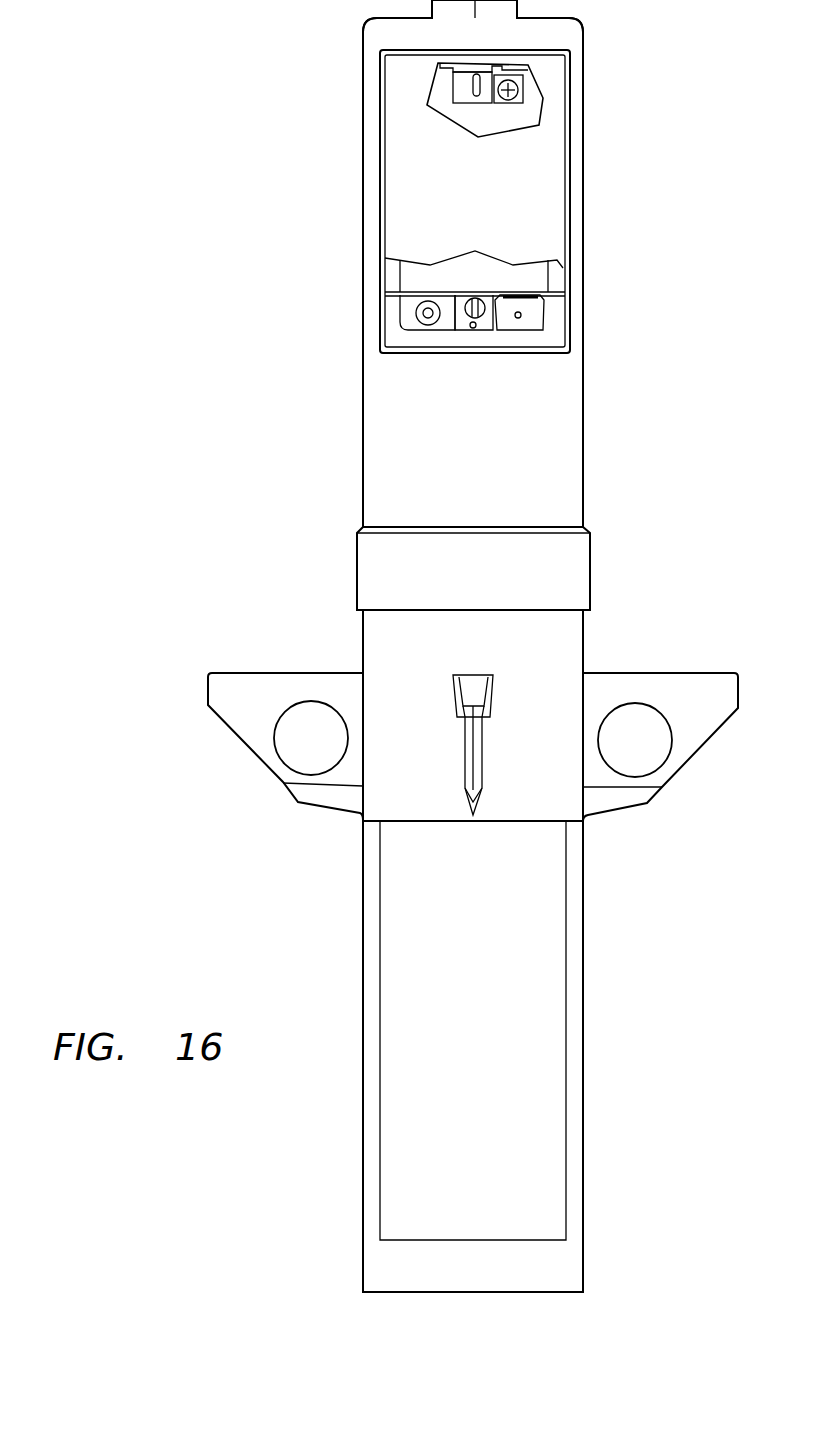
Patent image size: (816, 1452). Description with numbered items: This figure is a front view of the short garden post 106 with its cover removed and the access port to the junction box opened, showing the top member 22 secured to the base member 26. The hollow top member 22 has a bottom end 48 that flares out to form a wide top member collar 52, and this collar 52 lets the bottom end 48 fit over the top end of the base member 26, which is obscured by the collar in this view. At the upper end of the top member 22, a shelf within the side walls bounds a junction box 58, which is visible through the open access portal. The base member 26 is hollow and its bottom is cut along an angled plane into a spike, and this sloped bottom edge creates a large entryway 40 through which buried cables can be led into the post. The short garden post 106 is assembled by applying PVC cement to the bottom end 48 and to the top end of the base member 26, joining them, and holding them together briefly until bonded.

The short garden post 106 is at (202, 507).
The top member 22 is at (457, 448).
The junction box 58 is at (452, 198).
The top member collar 52 is at (575, 573).
The bottom end of the top member 48 is at (392, 597).
The base member 26 is at (518, 659).
The entryway 40 is at (522, 1008).